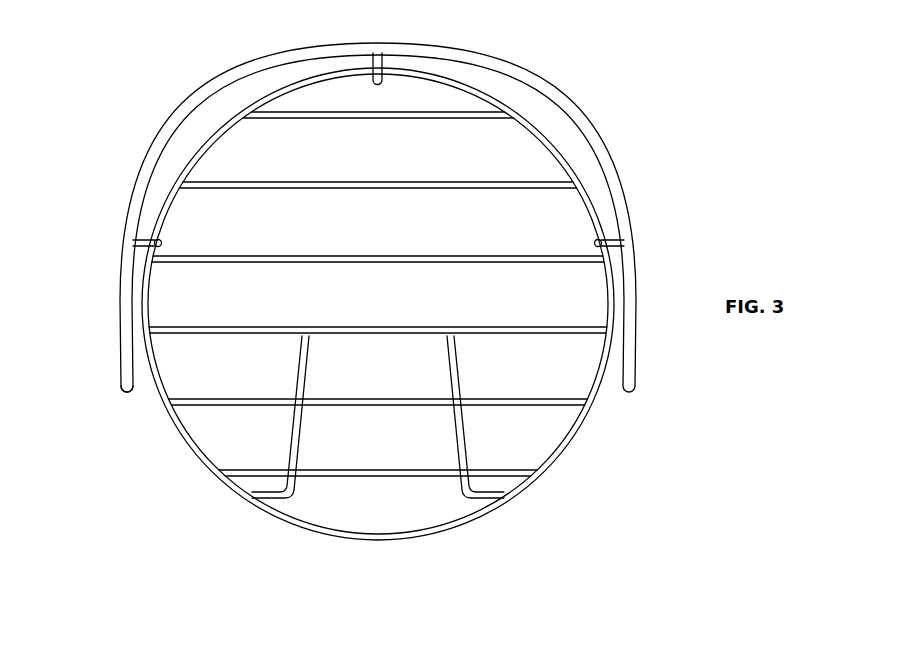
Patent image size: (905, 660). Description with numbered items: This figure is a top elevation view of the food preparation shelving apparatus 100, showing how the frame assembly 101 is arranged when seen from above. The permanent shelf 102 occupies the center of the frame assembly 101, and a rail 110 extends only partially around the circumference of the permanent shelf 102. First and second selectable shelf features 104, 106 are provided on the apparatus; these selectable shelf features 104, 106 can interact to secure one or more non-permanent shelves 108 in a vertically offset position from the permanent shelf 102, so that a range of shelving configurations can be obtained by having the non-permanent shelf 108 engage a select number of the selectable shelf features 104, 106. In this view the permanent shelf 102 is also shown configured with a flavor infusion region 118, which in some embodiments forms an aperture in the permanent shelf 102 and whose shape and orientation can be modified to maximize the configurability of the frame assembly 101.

The food preparation shelving apparatus 100 is at (147, 65).
The frame assembly 101 is at (636, 241).
The permanent shelf 102 is at (463, 494).
The first selectable shelf feature 104 is at (168, 242).
The second selectable shelf feature 106 is at (374, 86).
The non-permanent shelf 108 is at (364, 541).
The rail 110 is at (122, 380).
The flavor infusion region 118 is at (324, 445).